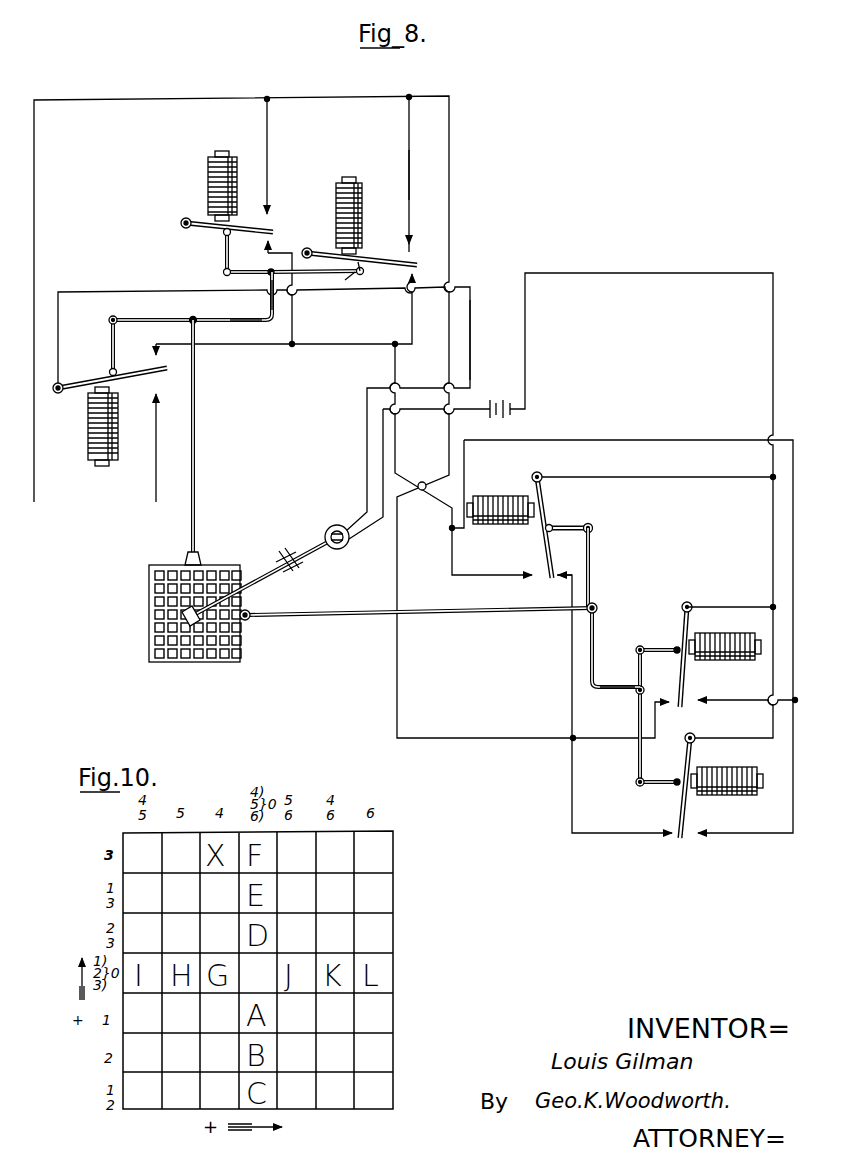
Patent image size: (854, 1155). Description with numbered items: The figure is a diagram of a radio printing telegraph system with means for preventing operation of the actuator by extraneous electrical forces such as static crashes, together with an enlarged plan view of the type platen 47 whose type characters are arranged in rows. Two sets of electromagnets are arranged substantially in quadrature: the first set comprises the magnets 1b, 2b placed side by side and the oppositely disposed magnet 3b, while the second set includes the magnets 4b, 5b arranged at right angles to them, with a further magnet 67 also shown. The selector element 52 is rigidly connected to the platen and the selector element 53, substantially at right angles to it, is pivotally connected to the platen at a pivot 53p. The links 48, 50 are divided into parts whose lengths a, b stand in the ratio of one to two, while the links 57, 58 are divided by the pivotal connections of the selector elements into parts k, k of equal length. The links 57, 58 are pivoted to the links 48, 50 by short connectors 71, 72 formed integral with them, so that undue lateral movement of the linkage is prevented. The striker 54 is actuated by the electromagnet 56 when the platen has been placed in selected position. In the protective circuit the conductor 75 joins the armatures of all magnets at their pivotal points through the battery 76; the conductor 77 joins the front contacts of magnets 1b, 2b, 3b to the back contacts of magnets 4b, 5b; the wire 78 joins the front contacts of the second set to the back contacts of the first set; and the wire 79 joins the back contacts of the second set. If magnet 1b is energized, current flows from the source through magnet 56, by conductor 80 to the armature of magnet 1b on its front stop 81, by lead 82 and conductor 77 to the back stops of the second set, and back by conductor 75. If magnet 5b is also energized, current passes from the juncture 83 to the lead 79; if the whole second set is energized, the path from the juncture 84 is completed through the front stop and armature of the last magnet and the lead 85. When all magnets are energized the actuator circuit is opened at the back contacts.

The conductor 77 is at (163, 99).
The lead 82 is at (409, 185).
The front stop 81 is at (411, 250).
The conductor 75 is at (116, 291).
The conductor 80 is at (471, 345).
The battery 76 is at (505, 412).
The wire 78 is at (356, 345).
The wire 79 is at (570, 667).
The juncture 84 is at (451, 528).
The lead 85 is at (685, 477).
The juncture 83 is at (572, 740).
The electromagnet 2b is at (207, 191).
The electromagnet 1b is at (362, 220).
The electromagnet 3b is at (89, 426).
The electromagnet 67 is at (490, 496).
The electromagnet 5b is at (716, 632).
The electromagnet 4b is at (712, 796).
The link part length a is at (430, 500).
The link part length b is at (491, 517).
The link part length k is at (346, 479).
The link 48 is at (340, 285).
The short connector 71 is at (283, 295).
The link 57 is at (245, 322).
The selector element 52 is at (197, 484).
The board 47 is at (232, 560).
The striker 54 is at (258, 570).
The electromagnet 56 is at (338, 551).
The selector element 53 is at (356, 611).
The pivot 53p is at (250, 609).
The link 58 is at (597, 613).
The short connector 72 is at (608, 693).
The link 50 is at (637, 766).